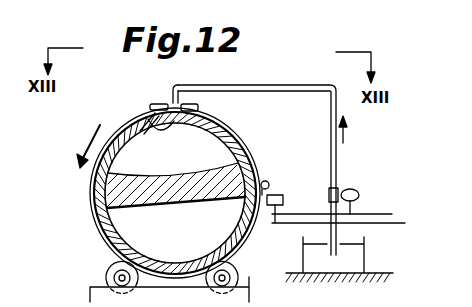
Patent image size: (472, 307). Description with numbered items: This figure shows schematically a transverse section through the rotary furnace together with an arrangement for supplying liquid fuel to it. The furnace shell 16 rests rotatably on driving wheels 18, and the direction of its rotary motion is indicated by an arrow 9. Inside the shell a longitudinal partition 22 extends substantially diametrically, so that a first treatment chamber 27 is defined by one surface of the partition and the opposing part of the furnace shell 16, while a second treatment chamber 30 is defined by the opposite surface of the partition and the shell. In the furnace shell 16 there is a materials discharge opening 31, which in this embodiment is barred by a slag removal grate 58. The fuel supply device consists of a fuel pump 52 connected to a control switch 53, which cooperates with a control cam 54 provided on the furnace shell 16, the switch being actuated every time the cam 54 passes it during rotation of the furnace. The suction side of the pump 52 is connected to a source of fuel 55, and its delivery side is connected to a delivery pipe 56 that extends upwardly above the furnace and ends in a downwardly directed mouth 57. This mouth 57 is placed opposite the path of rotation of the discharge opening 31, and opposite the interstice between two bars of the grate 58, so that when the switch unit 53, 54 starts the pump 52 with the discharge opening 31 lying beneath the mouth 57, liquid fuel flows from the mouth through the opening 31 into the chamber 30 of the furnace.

The arrow 9 is at (78, 140).
The furnace shell 16 is at (88, 178).
The driving wheels 18 is at (105, 270).
The longitudinal partition 22 is at (100, 222).
The first treatment chamber 27 is at (189, 234).
The second treatment chamber 30 is at (192, 160).
The materials discharge opening 31 is at (140, 118).
The fuel pump 52 is at (357, 193).
The control switch 53 is at (285, 200).
The control cam 54 is at (267, 182).
The source of fuel 55 is at (352, 256).
The delivery pipe 56 is at (275, 86).
The downwardly directed mouth 57 is at (172, 96).
The slag removal grate 58 is at (191, 106).